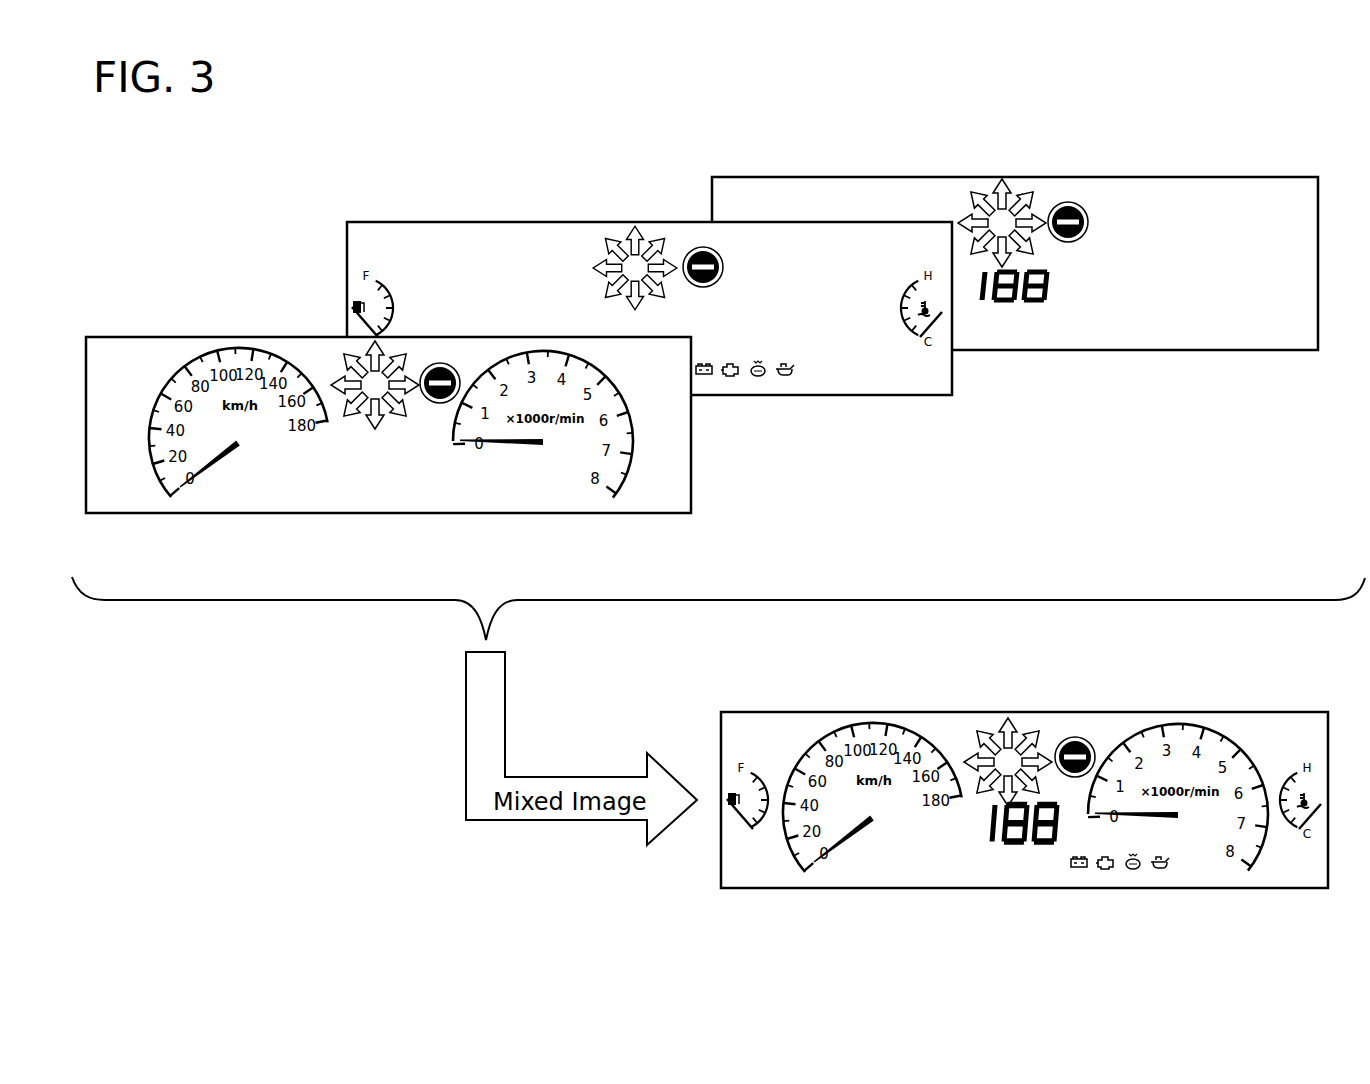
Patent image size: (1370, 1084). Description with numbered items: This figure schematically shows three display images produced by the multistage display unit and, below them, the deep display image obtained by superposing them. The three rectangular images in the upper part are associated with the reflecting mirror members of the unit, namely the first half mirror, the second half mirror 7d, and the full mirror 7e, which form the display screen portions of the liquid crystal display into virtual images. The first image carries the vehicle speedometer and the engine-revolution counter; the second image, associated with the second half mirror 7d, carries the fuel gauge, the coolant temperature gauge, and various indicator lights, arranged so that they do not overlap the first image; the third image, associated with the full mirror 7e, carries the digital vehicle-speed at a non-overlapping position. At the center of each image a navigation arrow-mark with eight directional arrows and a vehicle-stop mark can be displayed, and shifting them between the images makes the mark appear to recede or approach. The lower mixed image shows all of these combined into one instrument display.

The second half mirror 7d is at (398, 222).
The full mirror 7e is at (1160, 177).